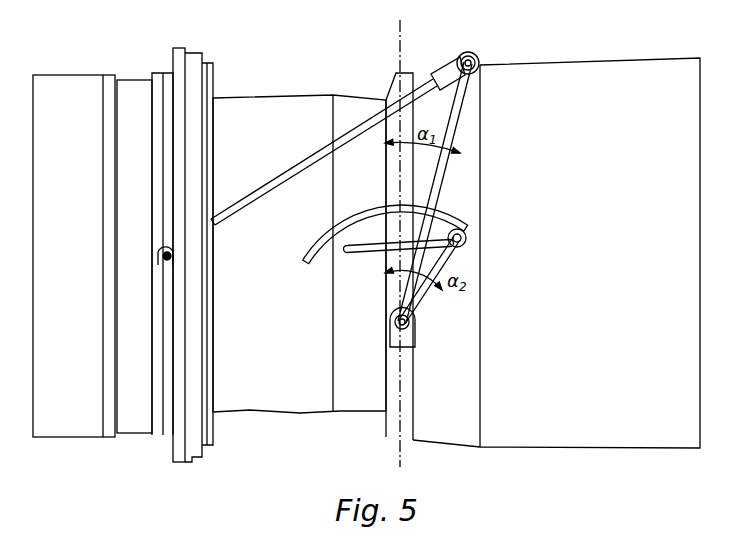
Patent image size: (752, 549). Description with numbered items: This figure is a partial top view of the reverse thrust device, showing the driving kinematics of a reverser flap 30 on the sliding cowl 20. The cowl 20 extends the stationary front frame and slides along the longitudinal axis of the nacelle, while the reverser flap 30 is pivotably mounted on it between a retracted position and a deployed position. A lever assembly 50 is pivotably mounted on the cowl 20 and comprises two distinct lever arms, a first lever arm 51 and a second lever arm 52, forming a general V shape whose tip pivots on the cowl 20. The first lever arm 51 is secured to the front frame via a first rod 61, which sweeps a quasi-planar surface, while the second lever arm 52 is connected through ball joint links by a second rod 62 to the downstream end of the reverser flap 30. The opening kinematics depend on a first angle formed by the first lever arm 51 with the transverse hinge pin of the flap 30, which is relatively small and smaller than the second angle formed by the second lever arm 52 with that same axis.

The cowl 20 is at (560, 413).
The reverser flap 30 is at (245, 393).
The lever assembly 50 is at (422, 320).
The first lever arm 51 is at (473, 92).
The second lever arm 52 is at (455, 262).
The first rod 61 is at (362, 126).
The second rod 62 is at (360, 243).